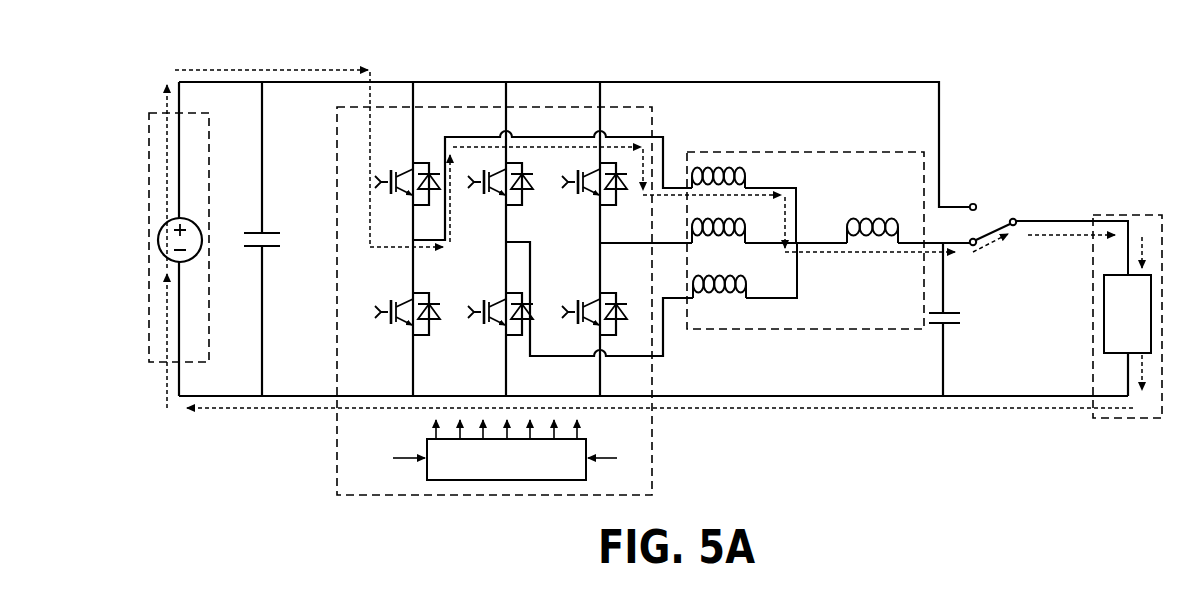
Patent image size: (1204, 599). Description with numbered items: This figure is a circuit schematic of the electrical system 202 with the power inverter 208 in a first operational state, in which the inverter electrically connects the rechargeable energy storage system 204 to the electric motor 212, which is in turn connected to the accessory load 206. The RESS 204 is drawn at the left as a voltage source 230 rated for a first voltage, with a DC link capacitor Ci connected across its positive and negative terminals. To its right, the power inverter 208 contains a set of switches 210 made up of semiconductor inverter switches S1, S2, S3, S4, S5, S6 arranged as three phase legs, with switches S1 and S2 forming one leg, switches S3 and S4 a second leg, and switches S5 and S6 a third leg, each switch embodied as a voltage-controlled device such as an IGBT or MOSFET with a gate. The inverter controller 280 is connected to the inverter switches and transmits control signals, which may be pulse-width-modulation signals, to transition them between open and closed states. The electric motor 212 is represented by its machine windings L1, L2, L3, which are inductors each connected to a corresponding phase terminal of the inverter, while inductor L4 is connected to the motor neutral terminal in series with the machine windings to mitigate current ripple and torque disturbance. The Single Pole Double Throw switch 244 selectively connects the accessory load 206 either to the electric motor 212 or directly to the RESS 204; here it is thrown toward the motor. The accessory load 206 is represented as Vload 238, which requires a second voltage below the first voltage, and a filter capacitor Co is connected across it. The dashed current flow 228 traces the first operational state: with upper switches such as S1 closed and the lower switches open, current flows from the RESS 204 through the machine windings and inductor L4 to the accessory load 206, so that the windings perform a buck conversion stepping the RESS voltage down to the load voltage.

The electrical system 202 is at (287, 61).
The current path 228 is at (654, 217).
The rechargeable energy storage system 204 is at (148, 183).
The DC voltage source 230 is at (160, 231).
The power inverter 208 is at (653, 130).
The set of switches 210 is at (483, 195).
The electric motor 212 is at (828, 215).
The Single Pole Double Throw switch 244 is at (1013, 218).
The accessory load 206 is at (1136, 292).
The Vload 238 is at (1113, 327).
The inverter controller 280 is at (492, 471).
The DC link capacitor Ci is at (265, 231).
The filter capacitor Co is at (950, 312).
The inverter switch S1 is at (393, 203).
The inverter switch S2 is at (392, 330).
The inverter switch S3 is at (496, 200).
The inverter switch S4 is at (492, 325).
The inverter switch S5 is at (588, 200).
The inverter switch S6 is at (585, 328).
The machine winding L1 is at (748, 172).
The machine winding L2 is at (748, 224).
The machine winding L3 is at (748, 280).
The inductor L4 is at (895, 218).